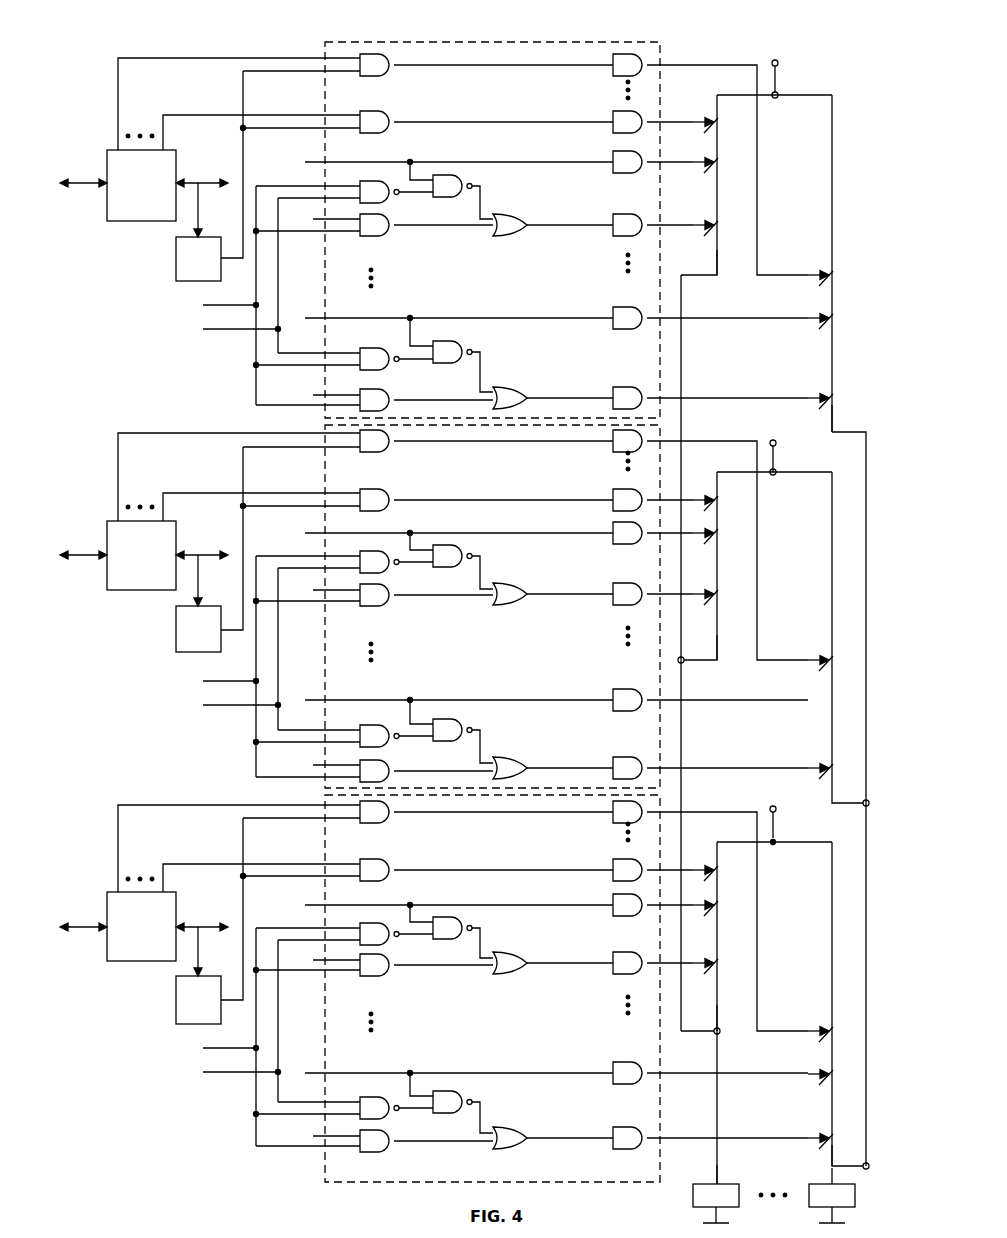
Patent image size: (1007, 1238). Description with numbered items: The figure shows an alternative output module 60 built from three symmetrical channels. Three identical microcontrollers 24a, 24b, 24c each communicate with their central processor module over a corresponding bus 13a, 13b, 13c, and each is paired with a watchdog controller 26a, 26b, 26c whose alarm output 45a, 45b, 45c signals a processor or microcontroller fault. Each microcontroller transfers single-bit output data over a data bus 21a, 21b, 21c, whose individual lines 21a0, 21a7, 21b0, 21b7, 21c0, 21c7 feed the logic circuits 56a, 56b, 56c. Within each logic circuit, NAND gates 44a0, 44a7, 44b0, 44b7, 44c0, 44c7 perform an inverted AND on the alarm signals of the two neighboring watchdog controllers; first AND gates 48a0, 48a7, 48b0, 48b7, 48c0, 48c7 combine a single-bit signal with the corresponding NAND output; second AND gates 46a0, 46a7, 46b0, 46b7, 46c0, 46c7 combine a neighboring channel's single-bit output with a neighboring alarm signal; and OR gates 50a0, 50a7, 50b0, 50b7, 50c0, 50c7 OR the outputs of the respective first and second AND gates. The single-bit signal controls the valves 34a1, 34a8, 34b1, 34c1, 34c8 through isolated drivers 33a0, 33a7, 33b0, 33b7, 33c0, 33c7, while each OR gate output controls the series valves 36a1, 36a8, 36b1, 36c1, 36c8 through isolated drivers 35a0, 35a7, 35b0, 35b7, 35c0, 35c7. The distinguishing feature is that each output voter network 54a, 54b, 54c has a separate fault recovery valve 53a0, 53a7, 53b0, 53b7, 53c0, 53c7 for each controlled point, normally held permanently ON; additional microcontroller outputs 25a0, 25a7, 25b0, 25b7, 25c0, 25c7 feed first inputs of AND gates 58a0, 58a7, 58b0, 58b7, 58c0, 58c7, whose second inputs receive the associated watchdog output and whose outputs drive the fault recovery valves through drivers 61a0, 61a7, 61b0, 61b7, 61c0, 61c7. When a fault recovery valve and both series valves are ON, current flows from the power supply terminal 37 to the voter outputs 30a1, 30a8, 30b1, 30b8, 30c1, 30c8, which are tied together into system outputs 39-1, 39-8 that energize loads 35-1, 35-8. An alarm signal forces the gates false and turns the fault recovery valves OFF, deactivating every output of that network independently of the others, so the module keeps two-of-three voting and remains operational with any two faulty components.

The output module 60 is at (206, 38).
The microcontroller 24a is at (106, 160).
The microcontroller 24b is at (106, 532).
The microcontroller 24c is at (106, 904).
The bus 13a is at (78, 187).
The bus 13b is at (78, 559).
The bus 13c is at (78, 931).
The additional output 25a7 is at (128, 88).
The additional output 25a0 is at (228, 114).
The additional output 25b7 is at (126, 462).
The additional output 25b0 is at (228, 492).
The additional output 25c7 is at (122, 834).
The additional output 25c0 is at (226, 863).
The watchdog controller output 45a is at (243, 160).
The watchdog controller output 45b is at (214, 339).
The watchdog controller output 45c is at (213, 308).
The data bus 21a is at (210, 188).
The data bus 21b is at (210, 560).
The data bus 21c is at (210, 932).
The watchdog controller 26a is at (176, 262).
The watchdog controller 26b is at (176, 633).
The watchdog controller 26c is at (176, 1003).
The logic circuit 56a is at (318, 288).
The logic circuit 56b is at (318, 662).
The logic circuit 56c is at (318, 1034).
The single-bit signal line 21a0 is at (336, 162).
The single-bit signal line 21a7 is at (336, 318).
The single-bit signal line 21b0 is at (376, 532).
The single-bit signal line 21b7 is at (384, 698).
The single-bit signal line 21c0 is at (348, 220).
The single-bit signal line 21c7 is at (348, 396).
The AND gate 58a7 is at (395, 72).
The AND gate 58a0 is at (395, 129).
The AND gate 58b7 is at (395, 448).
The AND gate 58b0 is at (395, 507).
The AND gate 58c7 is at (395, 819).
The AND gate 58c0 is at (395, 877).
The driver 61a7 is at (610, 73).
The driver 61a0 is at (610, 130).
The driver 61b7 is at (610, 450).
The driver 61b0 is at (610, 508).
The driver 61c7 is at (611, 822).
The driver 61c0 is at (611, 878).
The NAND gate 44a0 is at (393, 204).
The NAND gate 44a7 is at (396, 359).
The NAND gate 44b0 is at (393, 574).
The NAND gate 44b7 is at (393, 746).
The NAND gate 44c0 is at (393, 946).
The NAND gate 44c7 is at (393, 1118).
The second AND gate 46a0 is at (393, 237).
The second AND gate 46a7 is at (426, 400).
The second AND gate 46b0 is at (393, 607).
The second AND gate 46b7 is at (394, 780).
The second AND gate 46c0 is at (393, 977).
The second AND gate 46c7 is at (390, 1152).
The first AND gate 48a0 is at (470, 176).
The first AND gate 48a7 is at (460, 340).
The first AND gate 48b0 is at (470, 546).
The first AND gate 48b7 is at (452, 718).
The first AND gate 48c0 is at (470, 918).
The first AND gate 48c7 is at (455, 1090).
The OR gate 50a0 is at (512, 236).
The OR gate 50a7 is at (528, 390).
The OR gate 50b0 is at (505, 605).
The OR gate 50b7 is at (527, 775).
The OR gate 50c0 is at (510, 975).
The OR gate 50c7 is at (512, 1150).
The isolated driver 33a0 is at (627, 176).
The isolated driver 33a7 is at (628, 329).
The isolated driver 33b0 is at (627, 546).
The isolated driver 33b7 is at (626, 711).
The isolated driver 33c0 is at (627, 916).
The isolated driver 33c7 is at (627, 1083).
The isolated driver 35a0 is at (625, 237).
The isolated driver 35a7 is at (645, 372).
The isolated driver 35b0 is at (624, 605).
The isolated driver 35b7 is at (620, 757).
The isolated driver 35c0 is at (624, 974).
The isolated driver 35c7 is at (625, 1151).
The fault recovery valve 53a0 is at (706, 112).
The fault recovery valve 53a7 is at (829, 268).
The fault recovery valve 53b0 is at (706, 490).
The fault recovery valve 53b7 is at (829, 654).
The fault recovery valve 53c0 is at (706, 860).
The fault recovery valve 53c7 is at (829, 1024).
The valve 34a1 is at (724, 168).
The valve 34a8 is at (845, 295).
The valve 34b1 is at (724, 539).
The valve 34c1 is at (724, 911).
The valve 34c8 is at (836, 1060).
The valve 36a1 is at (722, 228).
The valve 36a8 is at (836, 384).
The valve 36b1 is at (722, 597).
The valve 36c1 is at (722, 966).
The valve 36c8 is at (828, 1133).
The output 30a1 is at (717, 258).
The output 30a8 is at (836, 412).
The output 30b1 is at (717, 640).
The output 30b8 is at (836, 796).
The output 30c1 is at (724, 1004).
The output 30c8 is at (835, 1150).
The terminal 37 is at (779, 82).
The output voter network 54a is at (848, 208).
The output voter network 54b is at (845, 606).
The output voter network 54c is at (840, 955).
The system output 39-1 is at (719, 1166).
The system output 39-8 is at (822, 1178).
The load 35-1 is at (692, 1196).
The load 35-8 is at (815, 1206).